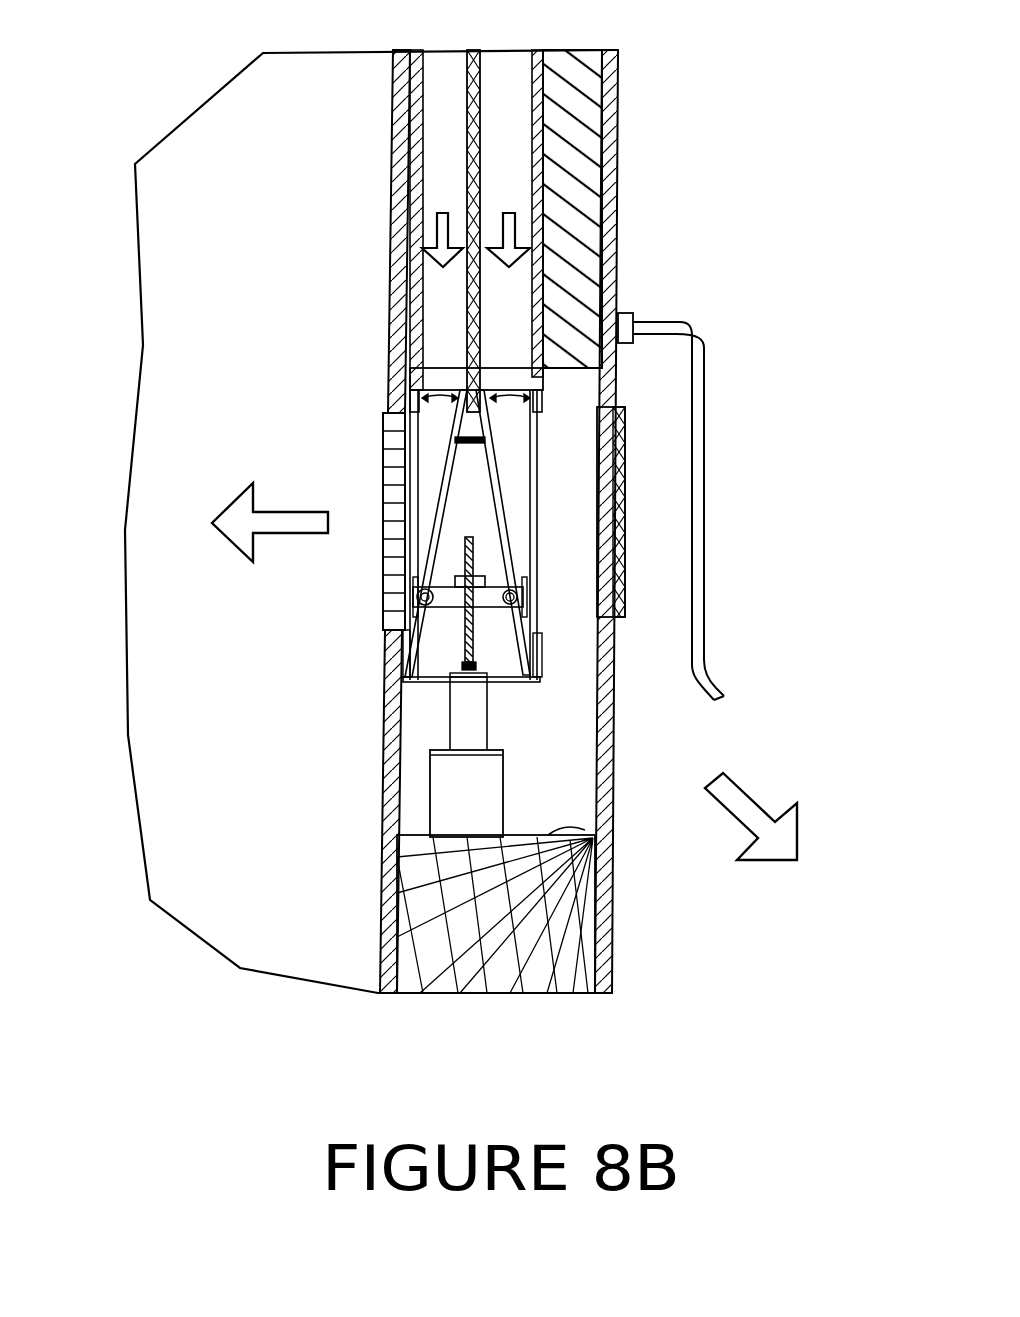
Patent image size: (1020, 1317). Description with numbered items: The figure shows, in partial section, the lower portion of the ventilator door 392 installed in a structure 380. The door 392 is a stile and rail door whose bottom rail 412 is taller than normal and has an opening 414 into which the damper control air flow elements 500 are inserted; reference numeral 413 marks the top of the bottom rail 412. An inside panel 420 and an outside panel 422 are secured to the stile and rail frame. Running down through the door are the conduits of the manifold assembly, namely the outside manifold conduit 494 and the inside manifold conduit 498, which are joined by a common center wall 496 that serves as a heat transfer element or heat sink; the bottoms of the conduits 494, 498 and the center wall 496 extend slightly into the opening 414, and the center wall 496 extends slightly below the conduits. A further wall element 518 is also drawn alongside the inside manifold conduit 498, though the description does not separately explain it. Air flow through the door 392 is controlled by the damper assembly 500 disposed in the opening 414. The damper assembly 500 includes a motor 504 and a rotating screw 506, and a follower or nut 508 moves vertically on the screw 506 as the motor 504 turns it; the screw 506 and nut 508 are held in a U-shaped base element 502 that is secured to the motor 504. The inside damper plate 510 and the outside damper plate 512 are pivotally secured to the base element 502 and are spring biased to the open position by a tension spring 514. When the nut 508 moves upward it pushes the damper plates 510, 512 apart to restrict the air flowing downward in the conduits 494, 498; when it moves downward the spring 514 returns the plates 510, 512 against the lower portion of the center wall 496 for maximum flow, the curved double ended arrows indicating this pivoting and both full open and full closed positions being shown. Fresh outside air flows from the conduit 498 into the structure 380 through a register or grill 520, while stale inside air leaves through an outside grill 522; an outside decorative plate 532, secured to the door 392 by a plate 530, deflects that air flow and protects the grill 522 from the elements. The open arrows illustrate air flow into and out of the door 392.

The structure 380 is at (197, 110).
The door 392 is at (640, 157).
The bottom rail 412 is at (470, 990).
The top of the bottom rail 413 is at (440, 368).
The opening 414 is at (560, 833).
The inside panel 420 is at (410, 390).
The outside panel 422 is at (618, 85).
The outside manifold conduit 494 is at (533, 90).
The common center wall 496 is at (467, 175).
The inside manifold conduit 498 is at (418, 92).
The damper assembly 500 is at (425, 498).
The U-shaped base element 502 is at (502, 683).
The motor 504 is at (468, 795).
The rotating screw 506 is at (462, 658).
The follower or nut 508 is at (485, 608).
The inside damper plate 510 is at (497, 467).
The outside damper plate 512 is at (427, 540).
The tension spring 514 is at (455, 440).
The inner wall 518 is at (413, 270).
The register or grill 520 is at (385, 628).
The outside grill 522 is at (607, 545).
The plate 530 is at (628, 310).
The outside decorative plate 532 is at (705, 635).